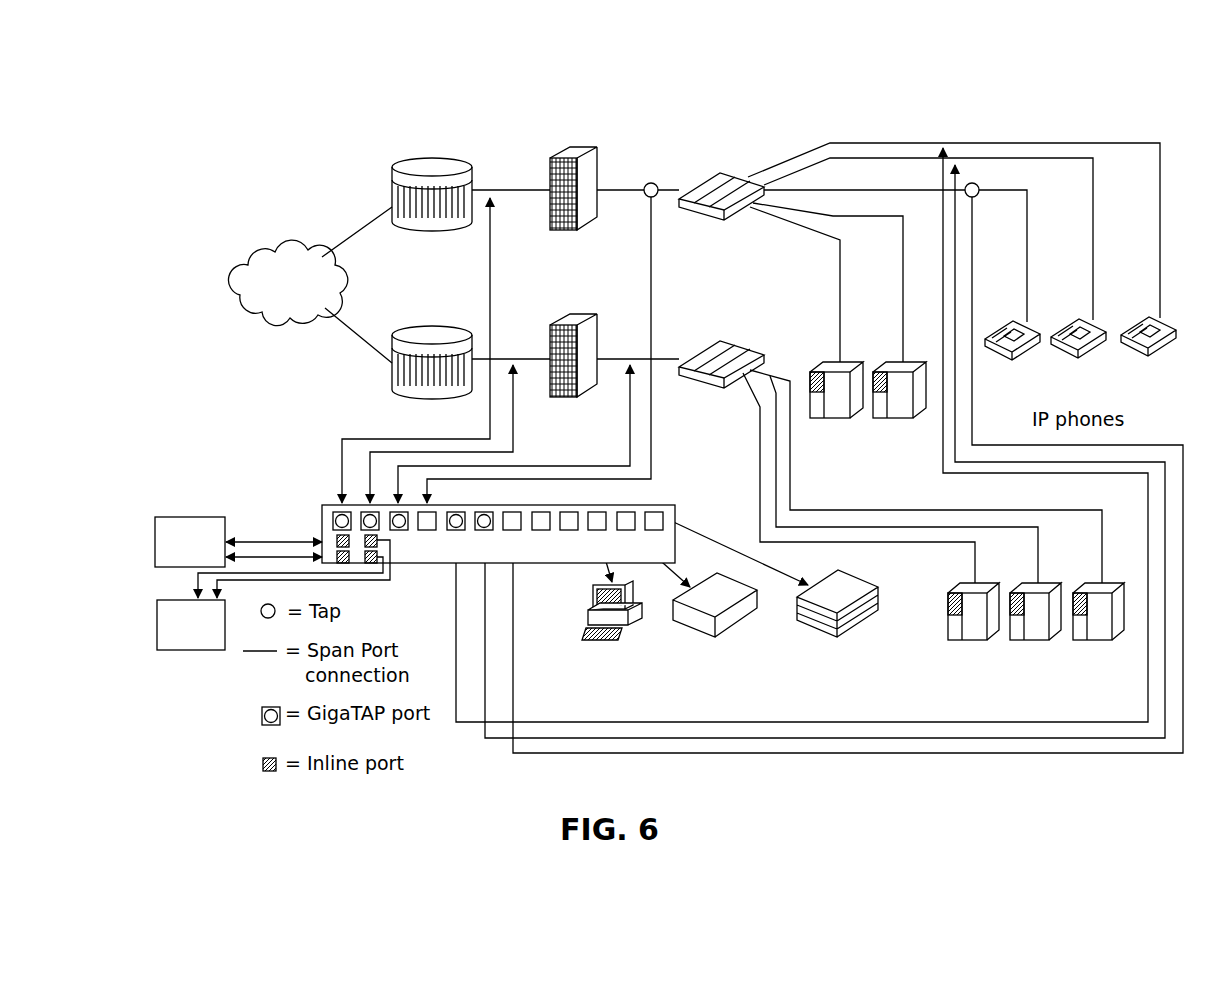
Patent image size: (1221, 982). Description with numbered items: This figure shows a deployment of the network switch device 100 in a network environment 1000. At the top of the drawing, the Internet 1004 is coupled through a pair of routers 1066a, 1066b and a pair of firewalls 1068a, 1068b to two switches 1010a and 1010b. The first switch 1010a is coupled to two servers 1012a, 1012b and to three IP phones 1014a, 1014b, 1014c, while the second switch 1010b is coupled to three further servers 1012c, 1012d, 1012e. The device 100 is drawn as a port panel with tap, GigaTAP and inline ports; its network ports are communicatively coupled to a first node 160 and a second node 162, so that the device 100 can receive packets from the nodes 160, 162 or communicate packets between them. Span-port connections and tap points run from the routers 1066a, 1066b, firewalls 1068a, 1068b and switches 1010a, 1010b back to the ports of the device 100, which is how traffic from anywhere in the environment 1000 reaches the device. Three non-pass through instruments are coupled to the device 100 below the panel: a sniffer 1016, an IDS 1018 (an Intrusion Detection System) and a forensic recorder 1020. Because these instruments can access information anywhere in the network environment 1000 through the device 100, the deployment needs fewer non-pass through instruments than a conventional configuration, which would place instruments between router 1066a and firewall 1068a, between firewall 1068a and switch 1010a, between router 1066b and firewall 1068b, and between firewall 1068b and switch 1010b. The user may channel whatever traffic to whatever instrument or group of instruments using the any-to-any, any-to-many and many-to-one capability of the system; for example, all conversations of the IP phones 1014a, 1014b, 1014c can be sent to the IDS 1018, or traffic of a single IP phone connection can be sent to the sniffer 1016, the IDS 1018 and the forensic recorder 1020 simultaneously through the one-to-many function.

The network environment 1000 is at (1042, 82).
The Internet 1004 is at (295, 243).
The router 1066a is at (435, 157).
The router 1066b is at (435, 323).
The firewall 1068a is at (562, 155).
The firewall 1068b is at (562, 322).
The switch 1010a is at (712, 177).
The switch 1010b is at (712, 344).
The server 1012a is at (815, 420).
The server 1012b is at (922, 420).
The server 1012c is at (965, 643).
The server 1012d is at (1025, 643).
The server 1012e is at (1118, 643).
The IP phone 1014a is at (1008, 362).
The IP phone 1014b is at (1083, 353).
The IP phone 1014c is at (1163, 348).
The network switch device 100 is at (322, 530).
The first node 160 is at (155, 542).
The second node 162 is at (157, 625).
The sniffer 1016 is at (595, 591).
The IDS 1018 is at (690, 632).
The forensic recorder 1020 is at (800, 620).